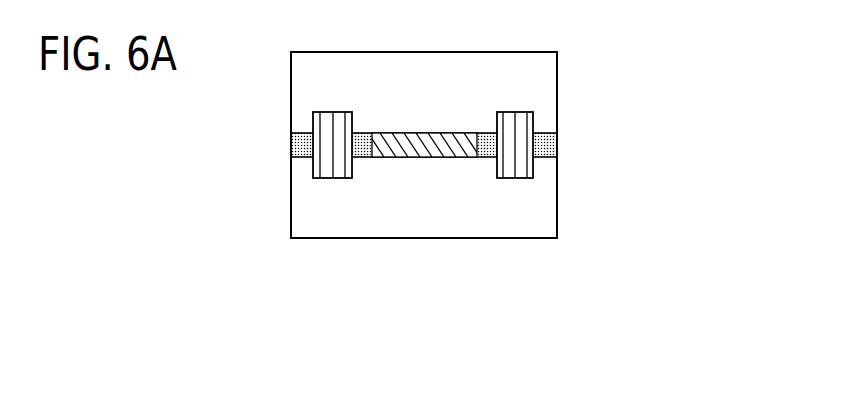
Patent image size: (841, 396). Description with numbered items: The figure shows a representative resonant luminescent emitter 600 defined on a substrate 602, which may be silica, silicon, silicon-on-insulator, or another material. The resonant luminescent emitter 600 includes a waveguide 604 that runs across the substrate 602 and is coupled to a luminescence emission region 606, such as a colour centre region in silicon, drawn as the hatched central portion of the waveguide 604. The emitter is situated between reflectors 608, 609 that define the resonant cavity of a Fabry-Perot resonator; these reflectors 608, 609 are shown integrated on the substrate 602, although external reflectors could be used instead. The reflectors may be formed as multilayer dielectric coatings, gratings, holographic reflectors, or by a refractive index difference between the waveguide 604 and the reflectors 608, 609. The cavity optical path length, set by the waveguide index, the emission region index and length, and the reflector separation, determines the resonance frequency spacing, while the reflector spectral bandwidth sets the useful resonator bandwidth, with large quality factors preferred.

The resonant luminescent emitter 600 is at (249, 265).
The substrate 602 is at (557, 52).
The waveguide 604 is at (558, 138).
The luminescence emission region 606 is at (423, 133).
The reflector 608 is at (350, 112).
The reflector 609 is at (497, 177).